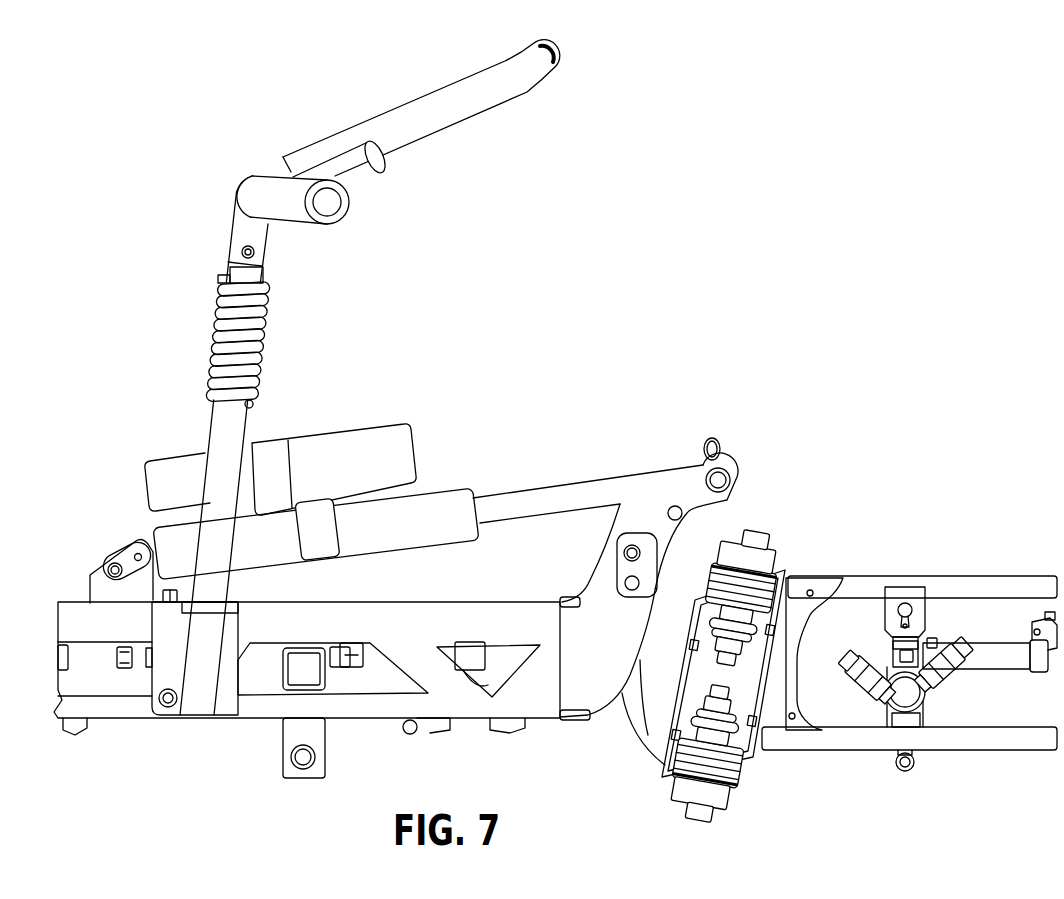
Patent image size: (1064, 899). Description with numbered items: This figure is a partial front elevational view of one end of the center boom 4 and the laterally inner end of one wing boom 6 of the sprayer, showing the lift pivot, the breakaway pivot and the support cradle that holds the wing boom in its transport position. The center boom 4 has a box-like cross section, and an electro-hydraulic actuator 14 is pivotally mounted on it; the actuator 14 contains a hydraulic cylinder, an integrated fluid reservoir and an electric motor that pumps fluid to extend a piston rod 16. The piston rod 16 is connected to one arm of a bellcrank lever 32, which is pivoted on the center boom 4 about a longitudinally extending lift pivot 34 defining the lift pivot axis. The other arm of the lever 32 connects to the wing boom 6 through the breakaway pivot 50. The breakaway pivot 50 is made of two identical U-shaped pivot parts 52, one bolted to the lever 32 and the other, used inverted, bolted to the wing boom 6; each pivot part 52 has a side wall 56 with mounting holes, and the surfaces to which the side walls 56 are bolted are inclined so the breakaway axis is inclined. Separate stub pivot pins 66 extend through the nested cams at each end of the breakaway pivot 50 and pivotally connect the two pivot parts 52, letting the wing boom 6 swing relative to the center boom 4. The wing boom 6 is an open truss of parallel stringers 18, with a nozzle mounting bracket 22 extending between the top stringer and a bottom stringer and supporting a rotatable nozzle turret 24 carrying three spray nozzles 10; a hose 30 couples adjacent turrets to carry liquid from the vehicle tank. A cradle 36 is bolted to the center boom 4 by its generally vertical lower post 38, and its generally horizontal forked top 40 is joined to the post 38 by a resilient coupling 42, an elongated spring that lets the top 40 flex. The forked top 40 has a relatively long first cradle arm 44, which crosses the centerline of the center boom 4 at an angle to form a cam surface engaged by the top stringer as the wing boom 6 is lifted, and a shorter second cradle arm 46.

The center boom 4 is at (243, 738).
The wing boom 6 is at (949, 555).
The spray nozzle 10 is at (858, 660).
The electro-hydraulic actuator 14 is at (438, 502).
The piston rod 16 is at (578, 492).
The stringer 18 is at (1018, 575).
The nozzle mounting bracket 22 is at (912, 603).
The nozzle turret 24 is at (912, 692).
The hose 30 is at (1000, 658).
The bellcrank lever 32 is at (705, 506).
The lift pivot 34 is at (624, 549).
The cradle 36 is at (218, 182).
The lower post 38 is at (222, 432).
The forked top 40 is at (399, 96).
The resilient coupling 42 is at (268, 318).
The first cradle arm 44 is at (446, 92).
The second cradle arm 46 is at (354, 172).
The breakaway pivot 50 is at (636, 760).
The pivot part 52 is at (790, 564).
The side wall 56 is at (775, 657).
The stub pivot pin 66 is at (752, 540).